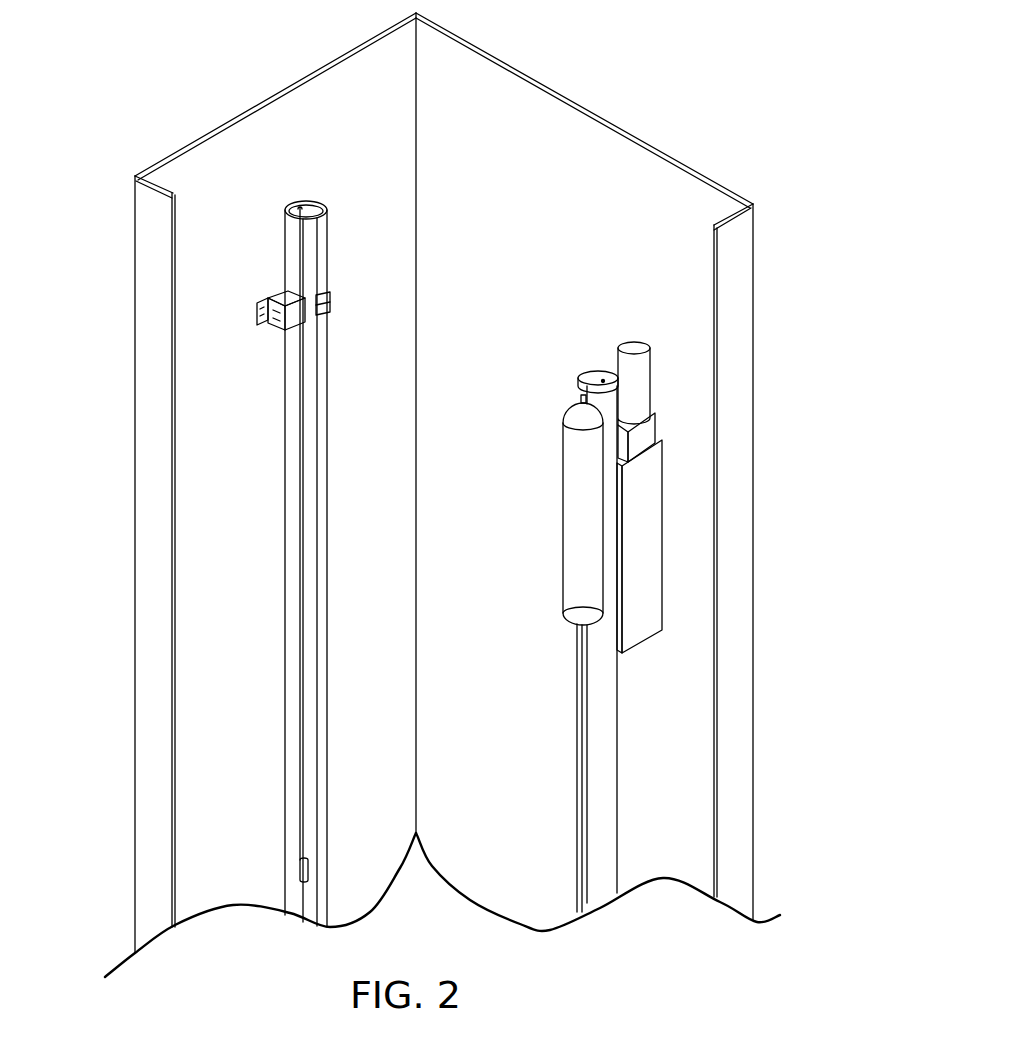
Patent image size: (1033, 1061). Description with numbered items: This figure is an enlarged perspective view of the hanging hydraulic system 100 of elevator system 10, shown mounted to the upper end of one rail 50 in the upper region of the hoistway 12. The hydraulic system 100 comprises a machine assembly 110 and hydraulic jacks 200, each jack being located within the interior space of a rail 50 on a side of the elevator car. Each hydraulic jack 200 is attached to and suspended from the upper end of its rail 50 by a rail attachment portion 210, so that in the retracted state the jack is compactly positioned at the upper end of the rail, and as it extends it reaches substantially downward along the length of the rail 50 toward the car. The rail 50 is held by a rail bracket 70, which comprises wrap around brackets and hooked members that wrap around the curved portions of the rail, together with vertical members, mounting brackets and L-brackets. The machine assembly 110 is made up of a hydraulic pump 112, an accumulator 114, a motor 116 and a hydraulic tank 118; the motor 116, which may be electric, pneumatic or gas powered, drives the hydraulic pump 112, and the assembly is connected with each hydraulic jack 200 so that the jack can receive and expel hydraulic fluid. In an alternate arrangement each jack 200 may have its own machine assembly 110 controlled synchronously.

The mounting system 10 is at (760, 58).
The hoistway 12 is at (450, 82).
The rail 50 is at (288, 257).
The rail bracket 70 is at (268, 327).
The hydraulic system 100 is at (578, 232).
The machine assembly 110 is at (665, 362).
The hydraulic pump 112 is at (645, 437).
The accumulator 114 is at (584, 517).
The motor 116 is at (641, 386).
The hydraulic tank 118 is at (648, 487).
The hydraulic jack 200 is at (300, 881).
The rail attachment portion 210 is at (318, 200).